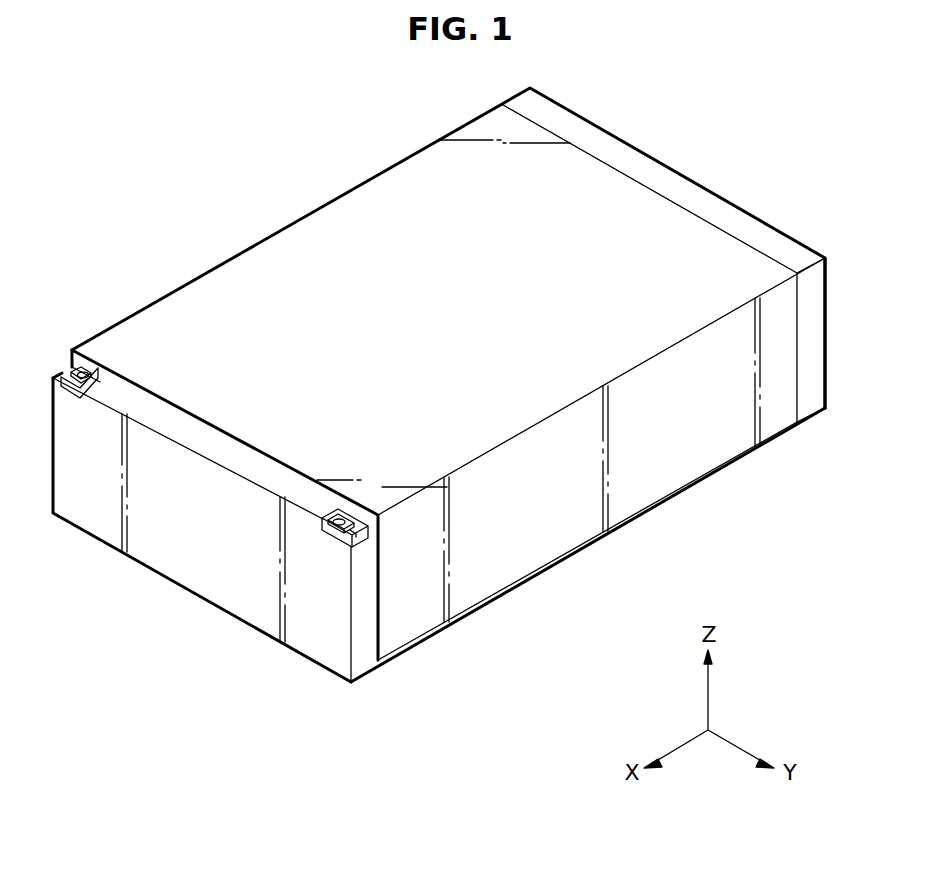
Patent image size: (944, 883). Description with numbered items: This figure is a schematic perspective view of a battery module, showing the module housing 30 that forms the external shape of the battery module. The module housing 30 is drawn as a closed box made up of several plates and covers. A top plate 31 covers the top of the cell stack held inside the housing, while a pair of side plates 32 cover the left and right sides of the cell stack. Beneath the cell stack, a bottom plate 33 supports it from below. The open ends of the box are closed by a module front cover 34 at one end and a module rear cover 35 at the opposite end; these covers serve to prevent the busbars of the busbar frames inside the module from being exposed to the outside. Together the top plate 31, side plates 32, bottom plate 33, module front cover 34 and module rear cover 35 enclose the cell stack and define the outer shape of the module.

The module housing 30 is at (462, 385).
The top plate 31 is at (341, 240).
The side plate 32 is at (690, 462).
The bottom plate 33 is at (538, 576).
The module front cover 34 is at (200, 572).
The module rear cover 35 is at (812, 320).